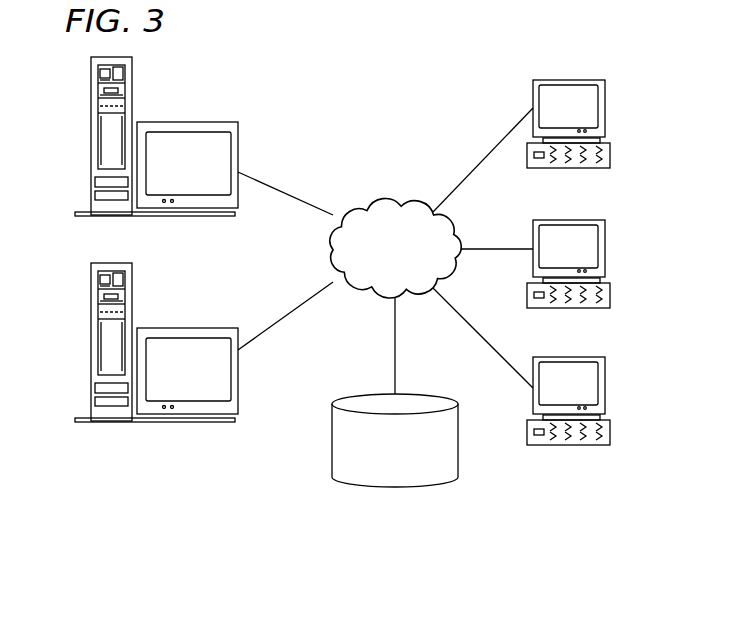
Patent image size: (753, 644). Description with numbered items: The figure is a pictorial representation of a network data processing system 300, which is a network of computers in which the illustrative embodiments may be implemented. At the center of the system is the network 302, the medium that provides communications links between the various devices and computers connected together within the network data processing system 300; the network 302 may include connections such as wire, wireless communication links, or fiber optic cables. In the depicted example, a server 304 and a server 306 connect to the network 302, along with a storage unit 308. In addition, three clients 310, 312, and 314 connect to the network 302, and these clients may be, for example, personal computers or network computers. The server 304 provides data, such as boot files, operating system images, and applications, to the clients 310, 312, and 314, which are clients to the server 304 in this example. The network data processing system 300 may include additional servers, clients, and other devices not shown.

The network data processing system 300 is at (448, 83).
The network 302 is at (365, 205).
The server 304 is at (91, 137).
The server 306 is at (92, 346).
The storage unit 308 is at (378, 487).
The client 310 is at (606, 109).
The client 312 is at (597, 277).
The client 314 is at (597, 414).